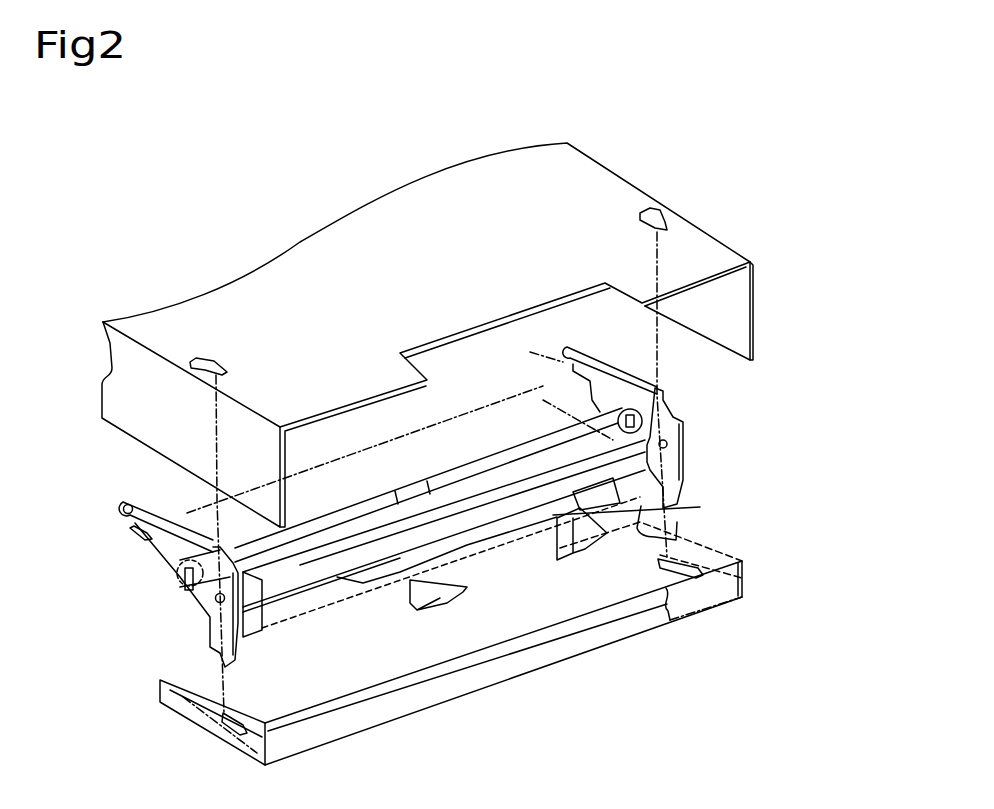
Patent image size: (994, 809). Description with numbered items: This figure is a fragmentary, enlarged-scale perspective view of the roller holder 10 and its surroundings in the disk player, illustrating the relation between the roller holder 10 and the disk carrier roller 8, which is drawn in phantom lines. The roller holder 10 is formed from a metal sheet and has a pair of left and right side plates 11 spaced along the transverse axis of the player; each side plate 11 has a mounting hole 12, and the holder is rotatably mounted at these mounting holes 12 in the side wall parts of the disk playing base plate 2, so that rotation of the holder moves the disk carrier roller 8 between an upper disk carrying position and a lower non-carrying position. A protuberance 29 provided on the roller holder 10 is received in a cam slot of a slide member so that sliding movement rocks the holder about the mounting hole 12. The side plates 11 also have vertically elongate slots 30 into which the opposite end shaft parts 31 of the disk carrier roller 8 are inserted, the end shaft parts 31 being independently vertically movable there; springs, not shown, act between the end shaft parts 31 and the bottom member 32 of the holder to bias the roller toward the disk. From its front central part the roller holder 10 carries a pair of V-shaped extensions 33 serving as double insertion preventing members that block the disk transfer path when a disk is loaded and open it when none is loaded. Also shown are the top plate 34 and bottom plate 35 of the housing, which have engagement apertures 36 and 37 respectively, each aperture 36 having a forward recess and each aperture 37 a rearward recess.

The disk playing base plate 2 is at (700, 507).
The disk carrier roller 8 is at (480, 470).
The roller holder 10 is at (281, 605).
The side plates 11 is at (168, 547).
The mounting hole 12 is at (217, 601).
The protuberance 29 is at (127, 514).
The vertically elongate slots 30 is at (182, 581).
The end shaft parts 31 is at (183, 576).
The bottom member 32 is at (320, 567).
The V-shaped extensions 33 is at (600, 537).
The top plate 34 is at (467, 300).
The bottom plate 35 is at (417, 692).
The engagement apertures 36 is at (205, 357).
The engagement apertures 37 is at (236, 724).